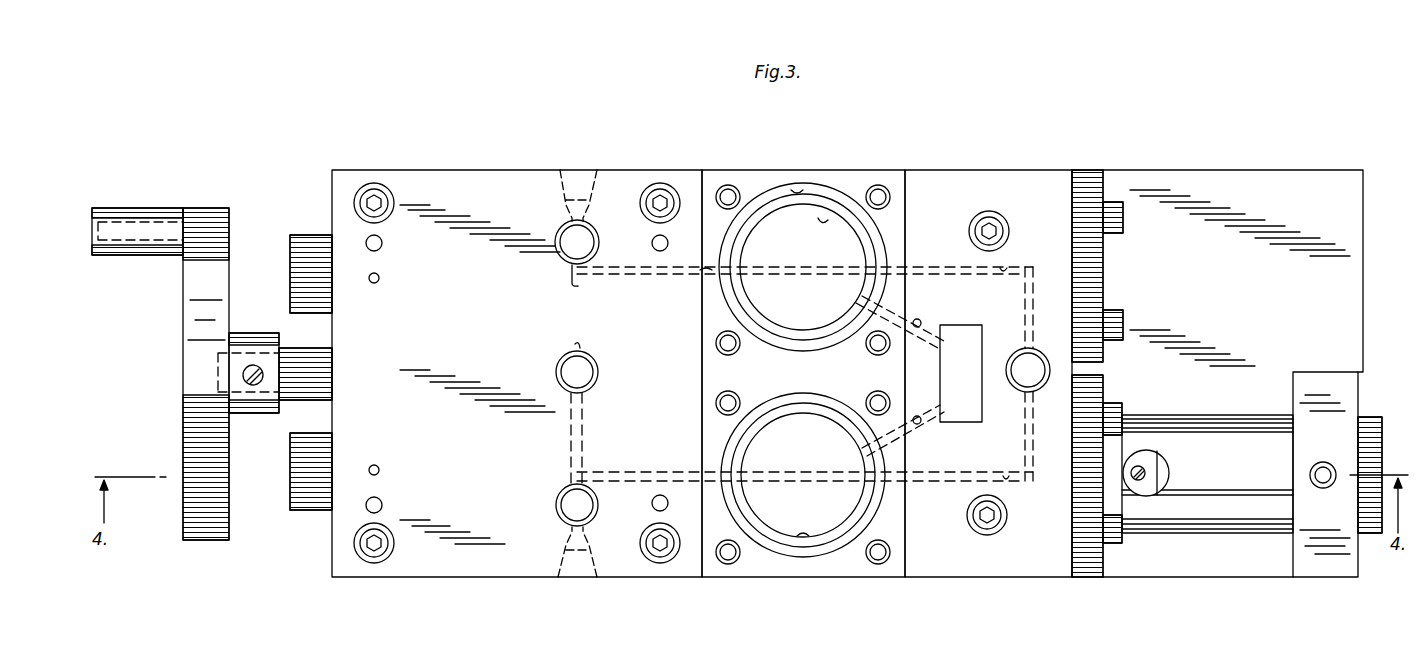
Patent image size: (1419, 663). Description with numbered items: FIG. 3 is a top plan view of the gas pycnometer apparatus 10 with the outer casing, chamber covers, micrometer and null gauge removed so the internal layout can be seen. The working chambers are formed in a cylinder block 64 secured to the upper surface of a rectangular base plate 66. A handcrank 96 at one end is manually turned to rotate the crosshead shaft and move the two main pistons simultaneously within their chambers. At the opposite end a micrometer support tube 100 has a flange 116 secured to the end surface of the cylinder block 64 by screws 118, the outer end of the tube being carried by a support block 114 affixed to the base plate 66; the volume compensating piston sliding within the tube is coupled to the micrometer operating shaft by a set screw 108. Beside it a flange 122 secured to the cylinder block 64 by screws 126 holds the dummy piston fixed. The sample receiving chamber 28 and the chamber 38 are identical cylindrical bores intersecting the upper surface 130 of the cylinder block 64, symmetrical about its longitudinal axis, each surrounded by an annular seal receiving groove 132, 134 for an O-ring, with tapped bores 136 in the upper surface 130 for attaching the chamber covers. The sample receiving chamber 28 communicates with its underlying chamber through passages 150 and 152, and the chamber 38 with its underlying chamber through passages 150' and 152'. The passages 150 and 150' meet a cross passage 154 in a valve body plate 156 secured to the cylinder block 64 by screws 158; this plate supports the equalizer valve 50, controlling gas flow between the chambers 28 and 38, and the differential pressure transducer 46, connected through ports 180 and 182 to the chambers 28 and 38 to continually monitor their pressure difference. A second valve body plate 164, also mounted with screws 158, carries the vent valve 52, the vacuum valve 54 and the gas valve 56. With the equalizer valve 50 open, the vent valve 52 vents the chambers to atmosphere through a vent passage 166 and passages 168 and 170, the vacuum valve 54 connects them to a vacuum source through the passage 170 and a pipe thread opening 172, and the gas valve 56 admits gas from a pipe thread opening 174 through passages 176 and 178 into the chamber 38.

The gas pycnometer apparatus 10 is at (1047, 130).
The sample receiving chamber 28 is at (805, 540).
The chamber 38 is at (823, 222).
The differential pressure transducer 46 is at (967, 412).
The equalizer valve 50 is at (1036, 360).
The vent valve 52 is at (562, 374).
The vacuum valve 54 is at (556, 508).
The gas valve 56 is at (557, 236).
The cylinder block 64 is at (762, 572).
The base plate 66 is at (1222, 565).
The handcrank 96 is at (192, 350).
The micrometer support tube 100 is at (1233, 430).
The set screw 108 is at (1140, 482).
The support block 114 is at (1363, 372).
The flange 116 is at (1092, 384).
The screws 118 is at (1116, 410).
The flange 122 is at (1092, 185).
The screws 126 is at (1123, 308).
The upper surface 130 is at (758, 170).
The annular seal receiving groove 132 is at (846, 545).
The annular seal receiving groove 134 is at (797, 190).
The tapped bores 136 is at (727, 188).
The passage 150 is at (1027, 452).
The passage 150' is at (1029, 290).
The passage 152 is at (903, 461).
The passage 152' is at (903, 285).
The cross passage 154 is at (1024, 303).
The valve body plate 156 is at (1033, 560).
The screws 158 is at (374, 183).
The second valve body plate 164 is at (408, 570).
The vent passage 166 is at (574, 342).
The passage 168 is at (584, 422).
The passage 170 is at (705, 474).
The pipe thread opening 172 is at (573, 580).
The pipe thread opening 174 is at (565, 170).
The passage 176 is at (617, 270).
The passage 178 is at (702, 272).
The port 180 is at (917, 424).
The port 182 is at (920, 320).